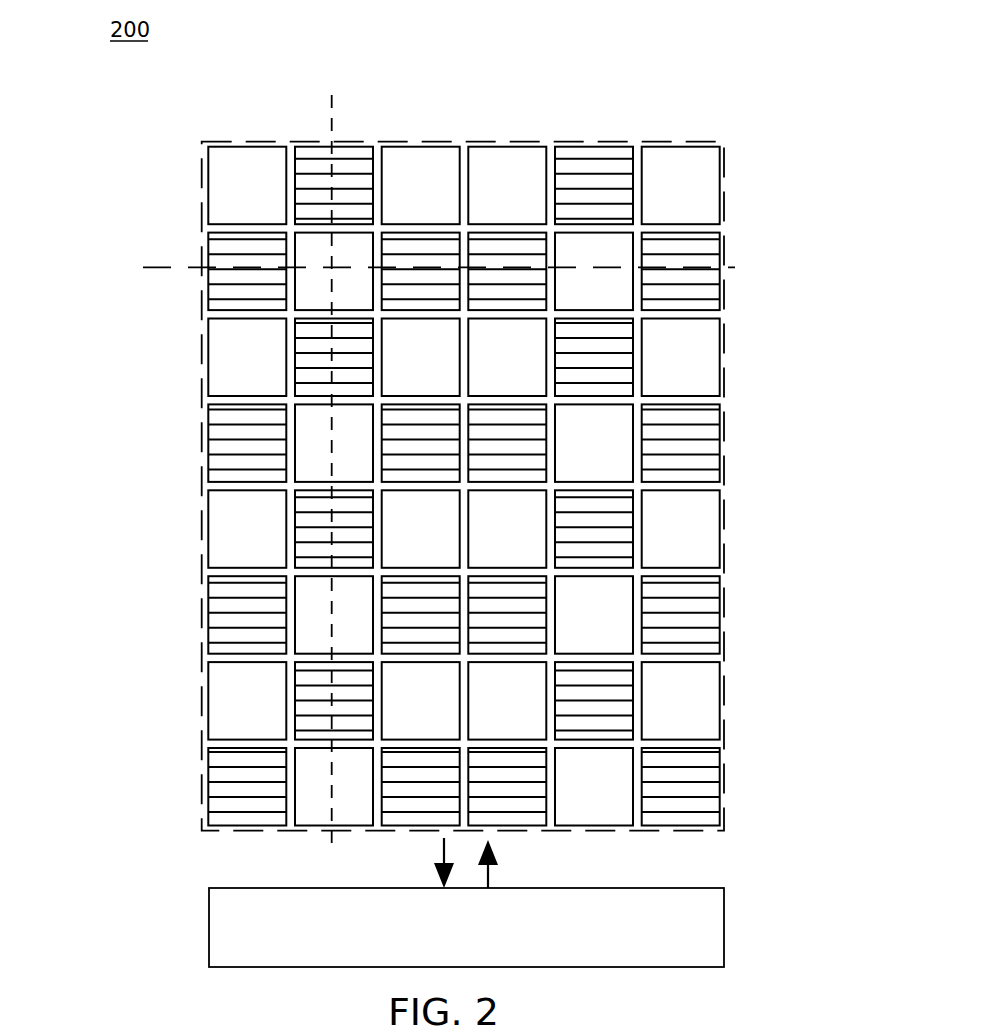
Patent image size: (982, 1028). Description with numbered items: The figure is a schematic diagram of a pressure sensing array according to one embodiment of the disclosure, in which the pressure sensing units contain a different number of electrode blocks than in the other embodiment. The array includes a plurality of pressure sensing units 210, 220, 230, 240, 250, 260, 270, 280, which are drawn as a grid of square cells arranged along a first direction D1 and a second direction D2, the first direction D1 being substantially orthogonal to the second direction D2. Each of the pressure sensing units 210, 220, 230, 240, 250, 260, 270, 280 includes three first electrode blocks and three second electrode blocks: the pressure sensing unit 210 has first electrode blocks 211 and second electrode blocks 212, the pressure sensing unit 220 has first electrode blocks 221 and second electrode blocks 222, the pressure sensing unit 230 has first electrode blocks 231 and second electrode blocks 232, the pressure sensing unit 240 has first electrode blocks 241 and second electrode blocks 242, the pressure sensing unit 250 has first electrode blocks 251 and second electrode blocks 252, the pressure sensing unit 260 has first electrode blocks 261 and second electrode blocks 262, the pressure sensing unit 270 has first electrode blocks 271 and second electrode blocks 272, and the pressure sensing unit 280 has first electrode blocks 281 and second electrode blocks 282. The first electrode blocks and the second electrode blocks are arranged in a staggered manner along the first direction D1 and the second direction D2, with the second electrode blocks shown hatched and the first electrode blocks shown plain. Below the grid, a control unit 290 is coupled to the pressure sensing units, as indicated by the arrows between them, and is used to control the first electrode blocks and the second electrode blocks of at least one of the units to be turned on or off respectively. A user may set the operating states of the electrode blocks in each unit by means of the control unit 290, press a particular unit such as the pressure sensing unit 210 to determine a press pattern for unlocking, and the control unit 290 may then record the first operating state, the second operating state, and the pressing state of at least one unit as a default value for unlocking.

The pressure sensing unit 210 is at (283, 224).
The first electrode block 211 is at (268, 197).
The second electrode block 212 is at (228, 252).
The pressure sensing unit 220 is at (637, 199).
The first electrode block 221 is at (527, 197).
The second electrode block 222 is at (605, 182).
The pressure sensing unit 230 is at (283, 400).
The first electrode block 231 is at (268, 369).
The second electrode block 232 is at (228, 454).
The pressure sensing unit 240 is at (637, 400).
The first electrode block 241 is at (527, 369).
The second electrode block 242 is at (690, 440).
The pressure sensing unit 250 is at (283, 571).
The first electrode block 251 is at (268, 541).
The second electrode block 252 is at (228, 626).
The pressure sensing unit 260 is at (637, 571).
The first electrode block 261 is at (527, 541).
The second electrode block 262 is at (690, 610).
The pressure sensing unit 270 is at (283, 743).
The first electrode block 271 is at (268, 713).
The second electrode block 272 is at (228, 797).
The pressure sensing unit 280 is at (637, 743).
The first electrode block 281 is at (527, 713).
The second electrode block 282 is at (690, 783).
The control unit 290 is at (485, 939).
The first direction D1 is at (330, 122).
The second direction D2 is at (155, 268).